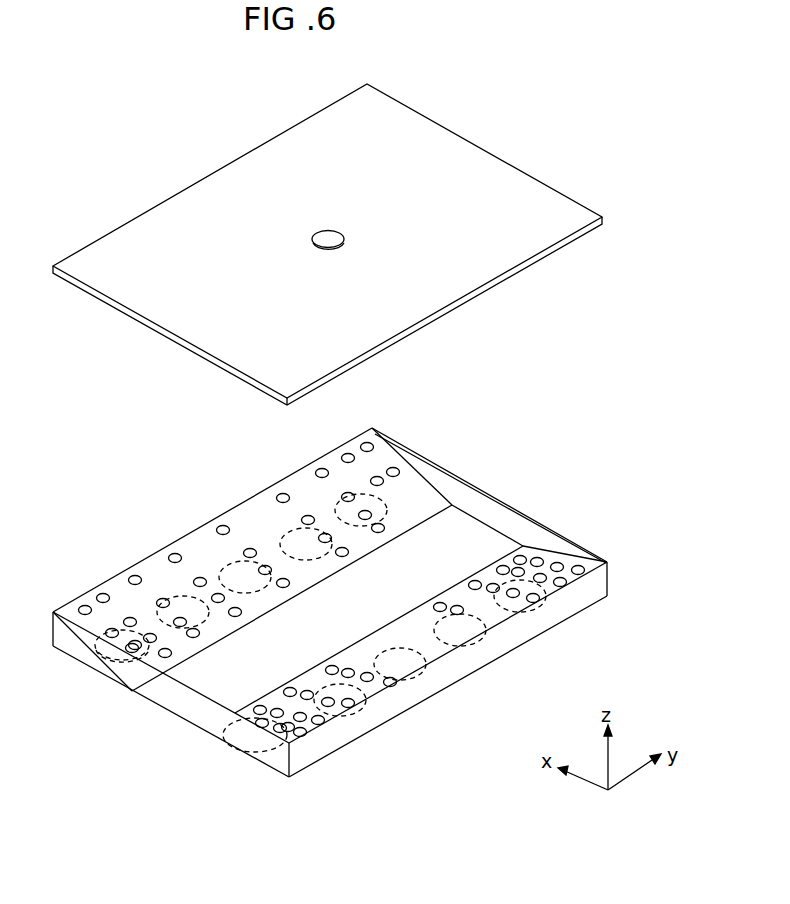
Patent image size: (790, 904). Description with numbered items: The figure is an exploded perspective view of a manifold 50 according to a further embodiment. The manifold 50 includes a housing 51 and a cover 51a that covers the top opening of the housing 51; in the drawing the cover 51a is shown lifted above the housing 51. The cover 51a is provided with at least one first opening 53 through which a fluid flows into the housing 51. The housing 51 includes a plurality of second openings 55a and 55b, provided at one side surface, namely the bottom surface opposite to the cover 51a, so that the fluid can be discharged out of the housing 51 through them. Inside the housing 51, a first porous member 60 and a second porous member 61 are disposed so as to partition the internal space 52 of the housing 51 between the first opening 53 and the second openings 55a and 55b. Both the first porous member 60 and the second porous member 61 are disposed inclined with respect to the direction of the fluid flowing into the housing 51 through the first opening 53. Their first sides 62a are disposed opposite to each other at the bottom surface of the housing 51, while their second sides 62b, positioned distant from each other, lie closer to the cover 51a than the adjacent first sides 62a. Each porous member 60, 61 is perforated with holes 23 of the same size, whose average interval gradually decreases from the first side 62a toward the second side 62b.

The holes 23 is at (223, 530).
The manifold 50 is at (603, 324).
The housing 51 is at (440, 465).
The cover 51a is at (547, 203).
The internal space 52 is at (450, 538).
The first opening 53 is at (327, 238).
The second opening 55a is at (135, 643).
The second opening 55b is at (290, 727).
The first porous member 60 is at (388, 460).
The second porous member 61 is at (548, 557).
The first side 62a is at (140, 688).
The second side 62b is at (283, 480).